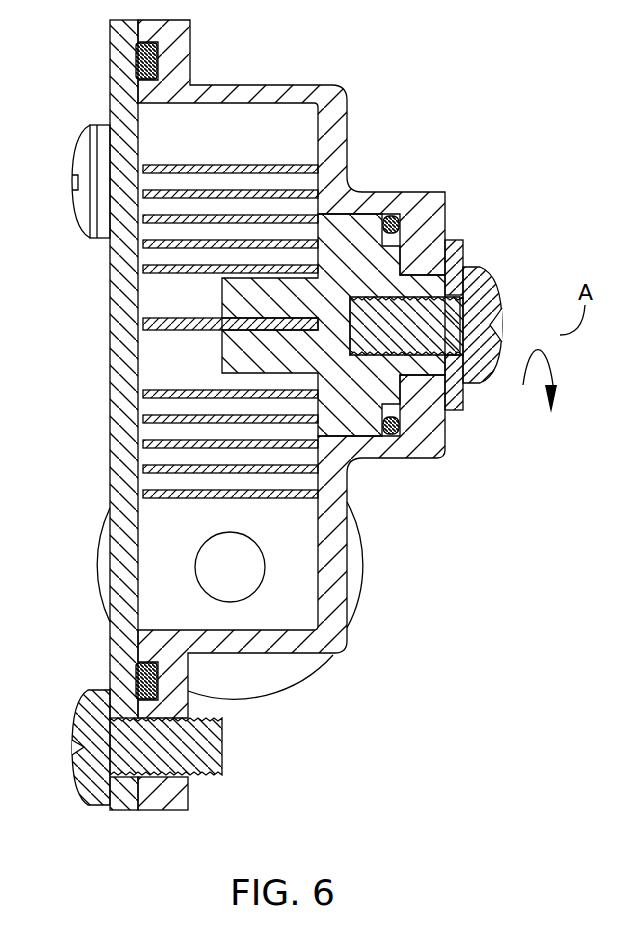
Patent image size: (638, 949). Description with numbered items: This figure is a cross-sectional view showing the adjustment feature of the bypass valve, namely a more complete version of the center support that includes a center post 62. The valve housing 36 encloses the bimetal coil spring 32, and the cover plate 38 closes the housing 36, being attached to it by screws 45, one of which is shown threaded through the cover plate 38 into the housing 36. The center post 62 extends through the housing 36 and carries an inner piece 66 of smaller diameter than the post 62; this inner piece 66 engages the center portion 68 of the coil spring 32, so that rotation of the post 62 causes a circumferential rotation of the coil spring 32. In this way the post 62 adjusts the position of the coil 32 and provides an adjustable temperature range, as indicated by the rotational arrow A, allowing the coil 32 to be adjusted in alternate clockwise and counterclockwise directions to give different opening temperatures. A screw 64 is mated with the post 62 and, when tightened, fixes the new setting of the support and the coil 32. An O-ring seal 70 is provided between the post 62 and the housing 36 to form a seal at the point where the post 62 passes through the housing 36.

The bimetal coil spring 32 is at (138, 406).
The valve housing 36 is at (355, 127).
The cover plate 38 is at (100, 307).
The screws 45 is at (78, 212).
The center post 62 is at (360, 225).
The screw 64 is at (480, 276).
The inner piece 66 is at (240, 360).
The center portion of the coil spring 68 is at (157, 325).
The O-ring seal 70 is at (390, 432).